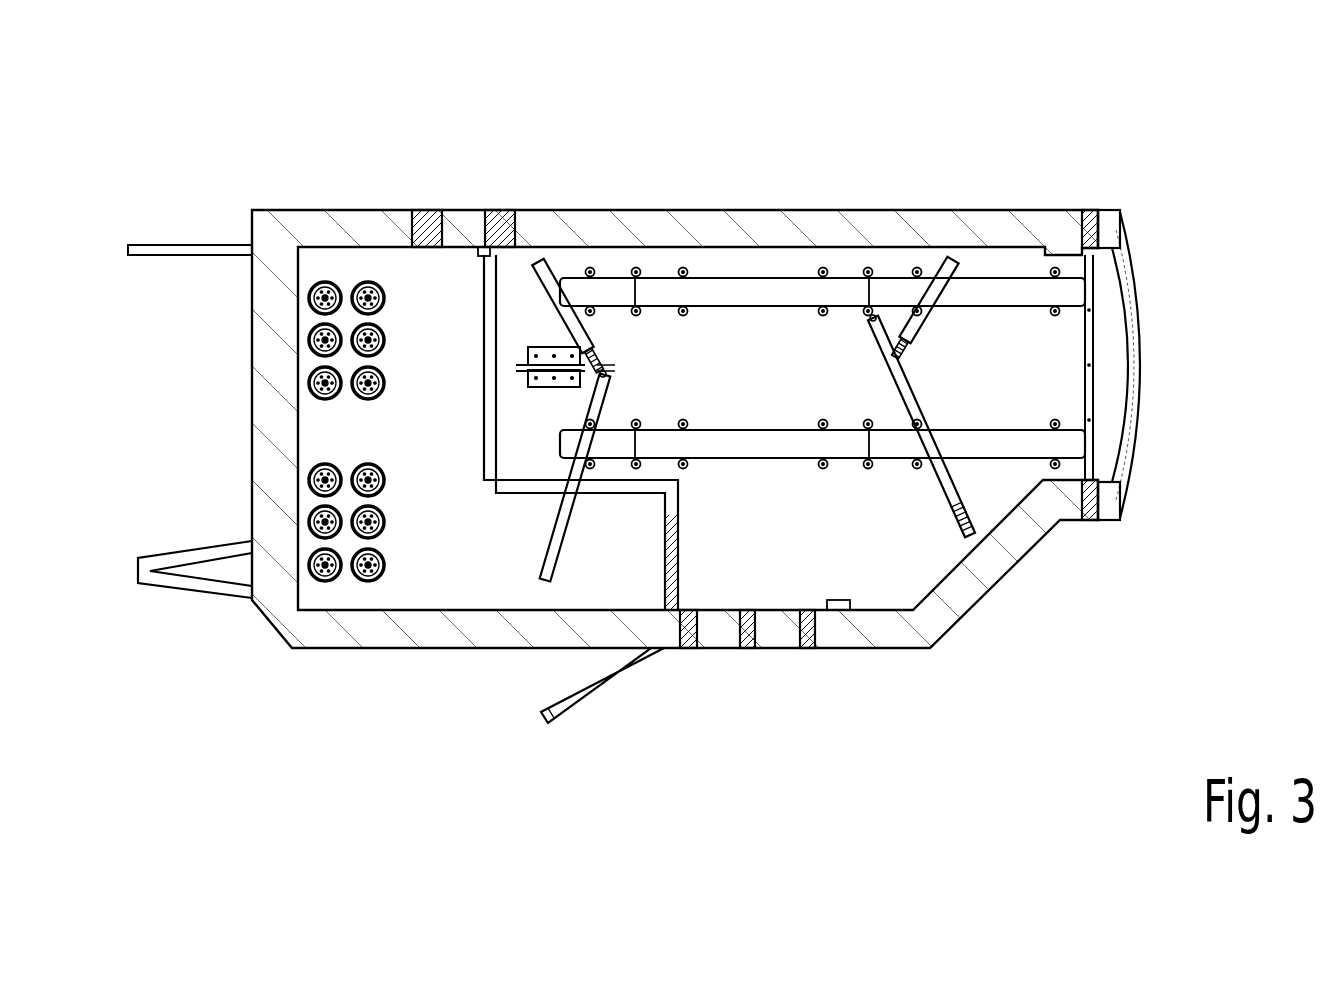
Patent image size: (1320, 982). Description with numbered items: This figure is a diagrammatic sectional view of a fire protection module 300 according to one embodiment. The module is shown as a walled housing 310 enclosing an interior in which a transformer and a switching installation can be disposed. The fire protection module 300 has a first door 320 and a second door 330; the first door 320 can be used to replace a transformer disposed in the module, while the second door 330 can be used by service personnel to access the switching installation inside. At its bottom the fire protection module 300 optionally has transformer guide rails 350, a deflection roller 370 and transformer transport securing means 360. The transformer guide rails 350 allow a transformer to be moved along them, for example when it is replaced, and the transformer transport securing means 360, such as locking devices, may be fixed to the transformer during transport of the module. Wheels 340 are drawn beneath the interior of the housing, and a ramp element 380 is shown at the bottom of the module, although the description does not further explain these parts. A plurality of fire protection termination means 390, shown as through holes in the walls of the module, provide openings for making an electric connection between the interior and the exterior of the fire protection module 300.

The fire protection module 300 is at (988, 624).
The housing body 310 is at (1024, 543).
The first door 320 is at (1133, 380).
The second door 330 is at (215, 553).
The wheels 340 is at (300, 280).
The transformer guide rails 350 is at (1012, 445).
The transformer transport securing means 360 is at (605, 398).
The deflection roller 370 is at (545, 387).
The ramp 380 is at (578, 707).
The fire protection termination means 390 is at (492, 210).